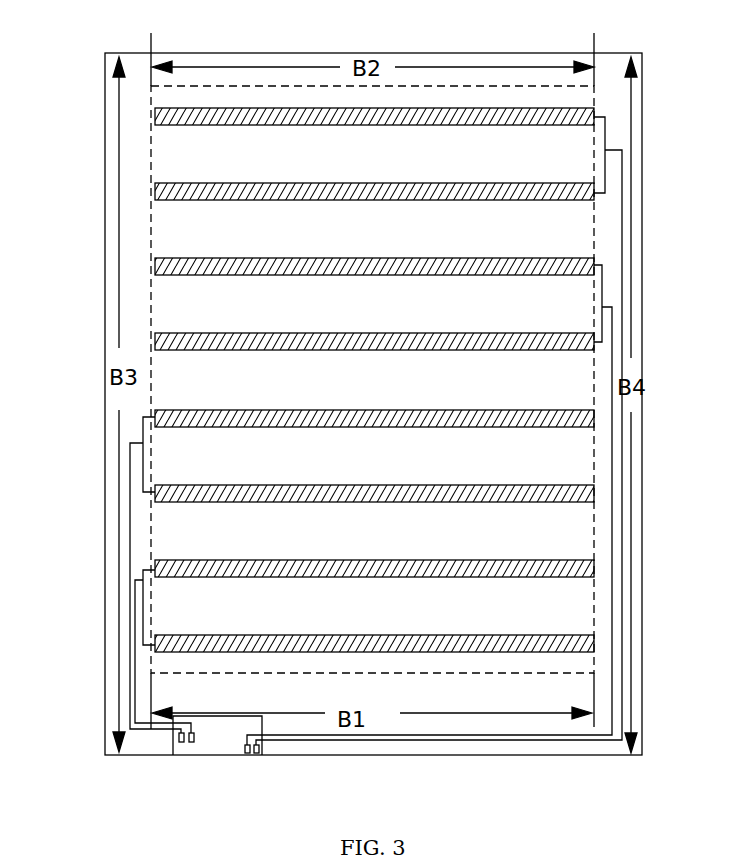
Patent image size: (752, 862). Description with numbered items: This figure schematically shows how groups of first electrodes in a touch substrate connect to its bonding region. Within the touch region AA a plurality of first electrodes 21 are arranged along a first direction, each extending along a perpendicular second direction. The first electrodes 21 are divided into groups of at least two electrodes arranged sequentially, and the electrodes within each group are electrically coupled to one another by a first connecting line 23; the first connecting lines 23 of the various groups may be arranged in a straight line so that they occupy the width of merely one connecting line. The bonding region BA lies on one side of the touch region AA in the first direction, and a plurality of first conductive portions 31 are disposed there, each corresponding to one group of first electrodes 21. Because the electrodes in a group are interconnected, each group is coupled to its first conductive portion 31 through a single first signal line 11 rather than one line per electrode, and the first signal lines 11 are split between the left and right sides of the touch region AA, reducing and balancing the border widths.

The first signal line 11 is at (623, 228).
The first electrode 21 is at (566, 107).
The first connecting line 23 is at (141, 422).
The first conductive portion 31 is at (171, 745).
The touch region AA is at (597, 107).
The bonding region BA is at (217, 750).